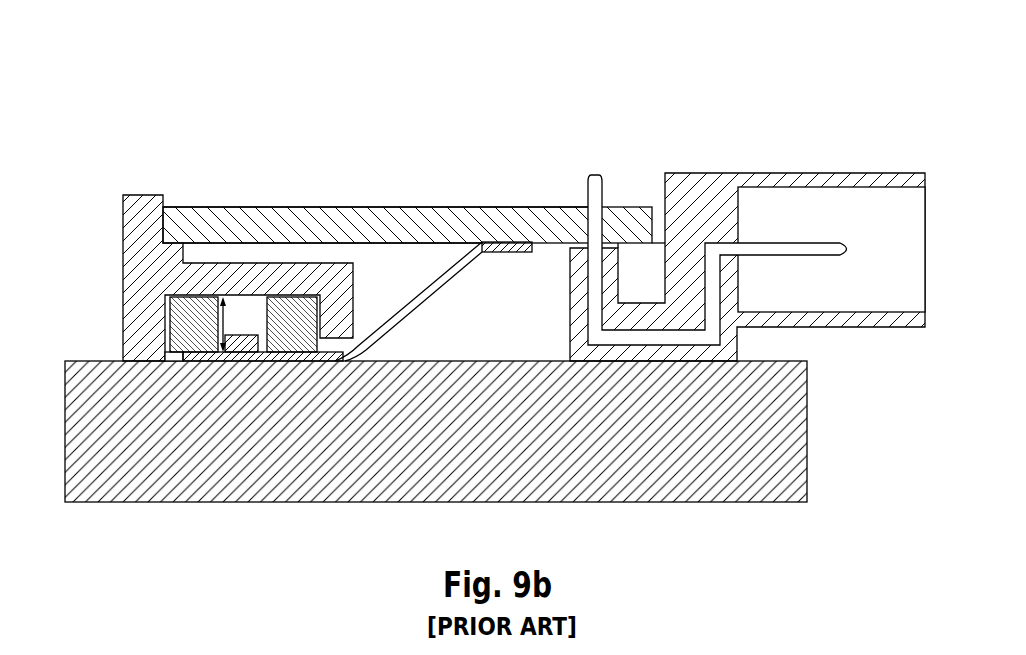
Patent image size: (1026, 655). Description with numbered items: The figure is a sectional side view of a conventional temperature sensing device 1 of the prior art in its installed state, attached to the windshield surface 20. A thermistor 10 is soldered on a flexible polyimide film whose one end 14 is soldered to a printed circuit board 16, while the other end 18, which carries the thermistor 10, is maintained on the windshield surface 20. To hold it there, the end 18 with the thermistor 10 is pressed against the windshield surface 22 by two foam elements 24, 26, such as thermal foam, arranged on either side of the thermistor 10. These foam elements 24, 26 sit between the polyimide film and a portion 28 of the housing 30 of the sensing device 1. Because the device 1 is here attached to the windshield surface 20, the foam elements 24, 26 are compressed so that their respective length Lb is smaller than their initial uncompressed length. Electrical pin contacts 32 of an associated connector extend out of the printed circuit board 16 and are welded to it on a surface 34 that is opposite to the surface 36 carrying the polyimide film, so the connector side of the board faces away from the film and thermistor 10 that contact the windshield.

The temperature sensing device 1 is at (530, 72).
The thermistor 10 is at (258, 345).
The end of the polyimide film 14 is at (493, 255).
The printed circuit board 16 is at (313, 228).
The end of the polyimide film 18 is at (225, 352).
The windshield surface 20 is at (790, 450).
The windshield surface 22 is at (118, 360).
The foam element 24 is at (340, 350).
The foam element 26 is at (190, 328).
The portion of the housing 28 is at (262, 272).
The housing 30 is at (147, 243).
The electrical pin contacts 32 is at (597, 198).
The surface of the PCB 34 is at (544, 207).
The surface of the PCB 36 is at (370, 243).
The compressed length of the foam elements Lb is at (225, 322).